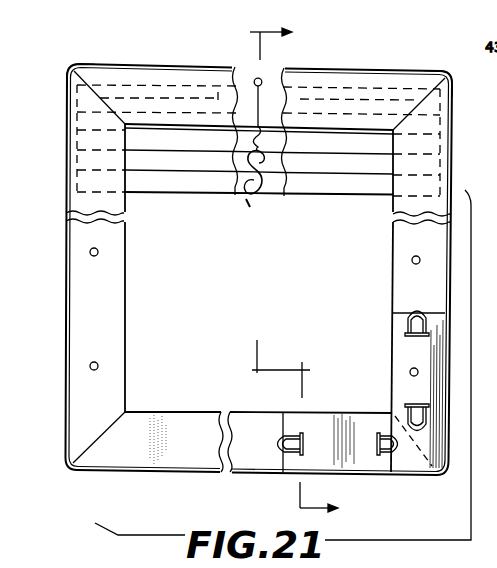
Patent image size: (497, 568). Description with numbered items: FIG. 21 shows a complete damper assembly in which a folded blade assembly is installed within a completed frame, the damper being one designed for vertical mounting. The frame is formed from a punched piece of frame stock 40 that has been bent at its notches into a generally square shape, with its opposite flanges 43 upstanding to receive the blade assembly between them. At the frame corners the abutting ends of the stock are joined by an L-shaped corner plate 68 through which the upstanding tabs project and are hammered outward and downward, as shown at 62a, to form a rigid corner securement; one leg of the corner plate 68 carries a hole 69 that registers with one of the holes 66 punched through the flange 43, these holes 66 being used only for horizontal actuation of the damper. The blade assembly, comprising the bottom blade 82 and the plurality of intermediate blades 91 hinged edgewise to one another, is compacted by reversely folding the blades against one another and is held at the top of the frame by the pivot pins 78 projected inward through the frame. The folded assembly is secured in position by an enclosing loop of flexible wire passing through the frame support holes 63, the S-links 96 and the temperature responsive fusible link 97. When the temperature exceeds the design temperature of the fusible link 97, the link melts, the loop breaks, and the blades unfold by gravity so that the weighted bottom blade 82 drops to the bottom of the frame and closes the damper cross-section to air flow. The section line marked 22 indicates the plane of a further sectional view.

The frame stock 40 is at (66, 381).
The pivot pins 78 is at (67, 99).
The intermediate blades 91 is at (190, 138).
The bottom blade 82 is at (348, 190).
The blade assembly support holes 63 is at (256, 78).
The S-links 96 is at (262, 198).
The temperature responsive fusible link 97 is at (249, 210).
The holes 66 is at (95, 256).
The hole 69 is at (410, 372).
The tabs hammered outward and downward 62a is at (408, 327).
The flanges 43 is at (145, 428).
The L-shaped corner plate 68 is at (327, 428).
The section line 22- 22 is at (310, 272).